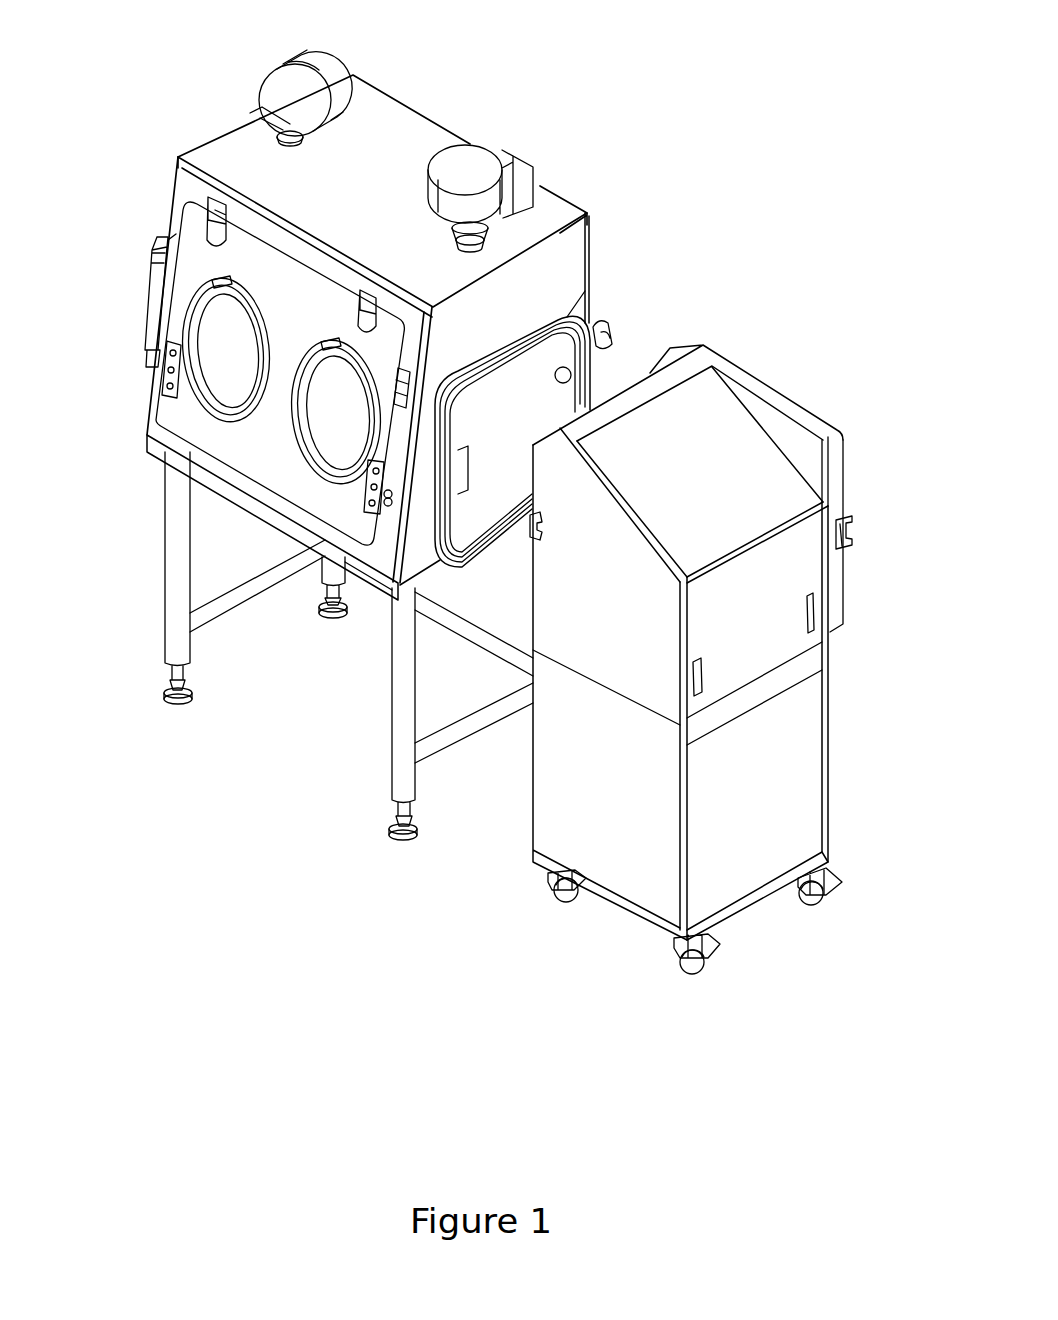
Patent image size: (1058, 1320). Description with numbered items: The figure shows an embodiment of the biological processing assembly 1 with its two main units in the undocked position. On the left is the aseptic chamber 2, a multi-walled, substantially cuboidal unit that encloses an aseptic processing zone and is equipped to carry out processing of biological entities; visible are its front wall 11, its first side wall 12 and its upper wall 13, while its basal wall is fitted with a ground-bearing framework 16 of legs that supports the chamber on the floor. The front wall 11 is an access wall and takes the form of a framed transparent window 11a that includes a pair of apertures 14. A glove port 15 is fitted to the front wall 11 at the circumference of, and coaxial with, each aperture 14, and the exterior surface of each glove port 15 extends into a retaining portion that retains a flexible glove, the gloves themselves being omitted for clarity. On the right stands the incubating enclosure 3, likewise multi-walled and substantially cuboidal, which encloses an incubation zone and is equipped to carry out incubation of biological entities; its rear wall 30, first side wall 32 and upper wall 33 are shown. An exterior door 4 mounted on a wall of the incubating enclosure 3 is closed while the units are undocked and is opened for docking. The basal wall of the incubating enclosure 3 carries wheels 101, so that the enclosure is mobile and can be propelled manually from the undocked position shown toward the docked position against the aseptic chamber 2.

The biological processing assembly 1 is at (543, 108).
The aseptic chamber 2 is at (182, 128).
The incubating enclosure 3 is at (856, 727).
The exterior door 4 is at (805, 410).
The front wall 11 is at (183, 184).
The framed transparent window 11a is at (186, 279).
The first side wall 12 is at (563, 270).
The upper wall 13 is at (405, 140).
The aperture 14 is at (333, 418).
The glove port 15 is at (322, 340).
The ground-bearing framework 16 is at (177, 572).
The rear wall 30 is at (787, 798).
The first side wall 32 is at (567, 791).
The upper wall 33 is at (773, 484).
The wheels 101 is at (808, 905).